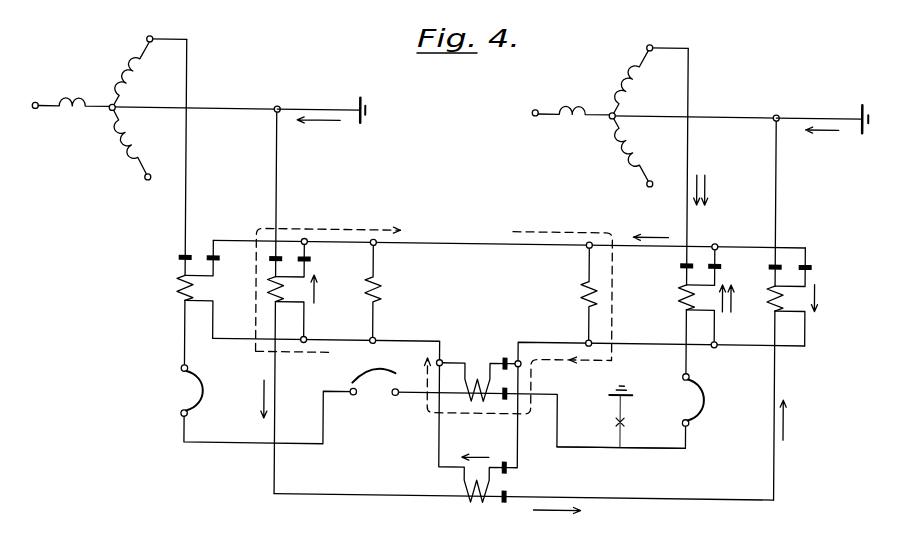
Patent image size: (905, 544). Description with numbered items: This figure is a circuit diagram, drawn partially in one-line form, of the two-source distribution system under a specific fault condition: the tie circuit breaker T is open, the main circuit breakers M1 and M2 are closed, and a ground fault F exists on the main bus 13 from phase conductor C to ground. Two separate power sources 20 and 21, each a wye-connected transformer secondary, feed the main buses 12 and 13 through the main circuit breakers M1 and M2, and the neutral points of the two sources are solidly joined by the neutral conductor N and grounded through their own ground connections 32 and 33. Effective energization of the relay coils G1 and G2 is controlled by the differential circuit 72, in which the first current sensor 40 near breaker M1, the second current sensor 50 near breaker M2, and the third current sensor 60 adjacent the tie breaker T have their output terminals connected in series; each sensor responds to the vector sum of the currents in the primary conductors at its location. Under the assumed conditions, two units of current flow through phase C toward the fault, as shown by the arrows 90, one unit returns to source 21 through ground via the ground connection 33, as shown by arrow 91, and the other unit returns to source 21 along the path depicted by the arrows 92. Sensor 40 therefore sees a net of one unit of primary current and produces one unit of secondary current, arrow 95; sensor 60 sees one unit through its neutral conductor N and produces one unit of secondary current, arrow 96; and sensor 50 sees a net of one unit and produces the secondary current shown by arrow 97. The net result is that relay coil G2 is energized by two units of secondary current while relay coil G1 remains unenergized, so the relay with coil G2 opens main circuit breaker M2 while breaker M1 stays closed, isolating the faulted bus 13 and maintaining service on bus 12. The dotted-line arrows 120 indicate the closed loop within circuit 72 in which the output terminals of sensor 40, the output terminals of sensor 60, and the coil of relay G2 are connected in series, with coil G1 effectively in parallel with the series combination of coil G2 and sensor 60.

The power source 20 is at (97, 78).
The power source 21 is at (597, 76).
The ground connection 32 is at (303, 102).
The ground connection 33 is at (818, 104).
The first current sensor 40 is at (246, 300).
The second current sensor 50 is at (763, 328).
The third current sensor 60 is at (482, 438).
The differential circuit 72 is at (457, 236).
The arrows 90 is at (708, 178).
The arrow 91 is at (826, 121).
The arrows 92 is at (321, 118).
The arrow 95 is at (318, 292).
The arrow 96 is at (490, 442).
The arrow 97 is at (657, 227).
The dotted-line arrows 120 is at (339, 221).
The main bus 12 is at (248, 444).
The main bus 13 is at (647, 441).
The phase-conductor C is at (187, 198).
The relay coil G1 is at (386, 281).
The relay coil G2 is at (600, 282).
The main circuit breaker M1 is at (194, 388).
The main circuit breaker M2 is at (707, 386).
The tie circuit breaker T is at (351, 376).
The ground fault F is at (632, 413).
The neutral conductor N is at (368, 492).